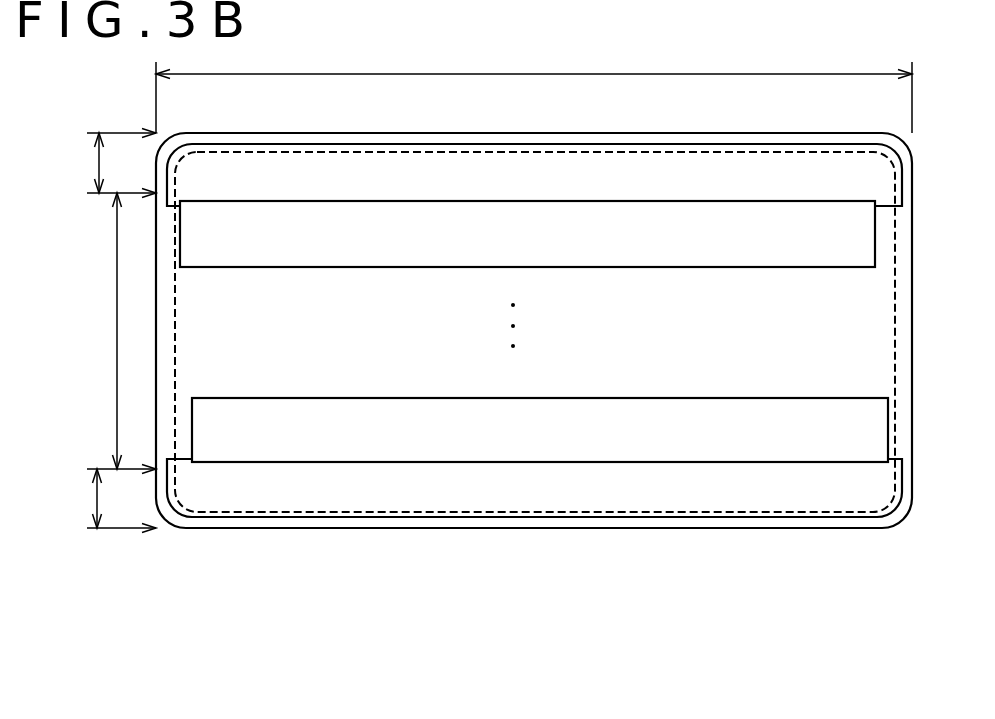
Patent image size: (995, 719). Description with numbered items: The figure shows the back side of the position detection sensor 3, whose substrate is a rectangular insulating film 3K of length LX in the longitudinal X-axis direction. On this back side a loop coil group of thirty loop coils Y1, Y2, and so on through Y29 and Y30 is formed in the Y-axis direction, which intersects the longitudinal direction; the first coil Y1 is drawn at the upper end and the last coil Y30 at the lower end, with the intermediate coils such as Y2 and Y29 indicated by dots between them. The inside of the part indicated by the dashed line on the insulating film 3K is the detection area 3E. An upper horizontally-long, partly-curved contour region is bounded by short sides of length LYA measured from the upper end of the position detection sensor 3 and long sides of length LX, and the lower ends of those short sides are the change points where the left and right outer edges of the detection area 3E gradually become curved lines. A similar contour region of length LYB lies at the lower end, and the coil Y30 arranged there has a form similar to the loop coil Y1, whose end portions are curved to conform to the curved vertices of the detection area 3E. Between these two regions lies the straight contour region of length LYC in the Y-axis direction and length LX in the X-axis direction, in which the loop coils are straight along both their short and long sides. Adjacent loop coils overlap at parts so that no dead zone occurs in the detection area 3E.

The position detection sensor 3 is at (543, 600).
The insulating film 3K is at (415, 528).
The detection area 3E is at (576, 513).
The loop coil Y1 is at (597, 144).
The loop coil Y2 is at (640, 267).
The loop coil Y29 is at (632, 397).
The loop coil Y30 is at (730, 518).
The length in longitudinal direction LX is at (534, 86).
The length of short sides of upper contour region LYA is at (97, 168).
The length of short sides of lower contour region LYB is at (95, 501).
The length of straight contour region LYC is at (94, 331).